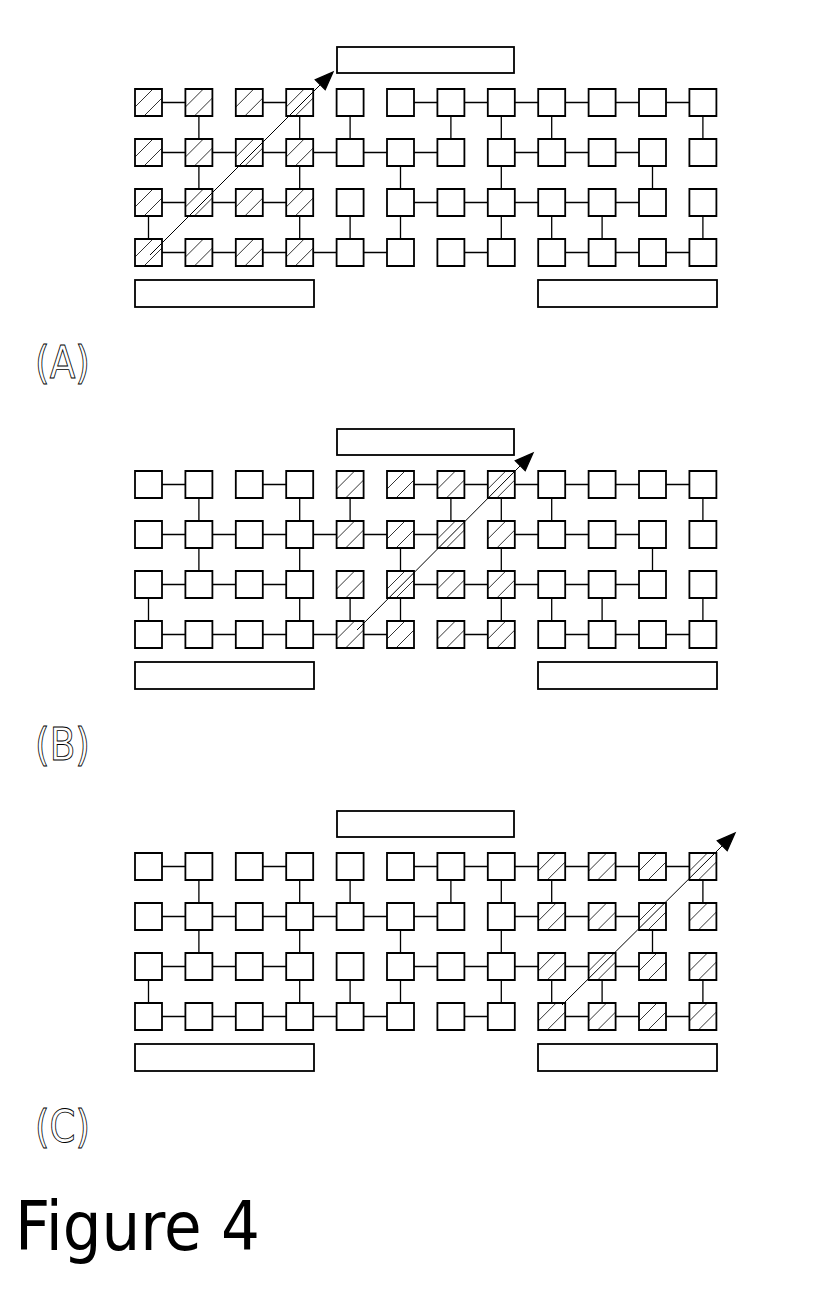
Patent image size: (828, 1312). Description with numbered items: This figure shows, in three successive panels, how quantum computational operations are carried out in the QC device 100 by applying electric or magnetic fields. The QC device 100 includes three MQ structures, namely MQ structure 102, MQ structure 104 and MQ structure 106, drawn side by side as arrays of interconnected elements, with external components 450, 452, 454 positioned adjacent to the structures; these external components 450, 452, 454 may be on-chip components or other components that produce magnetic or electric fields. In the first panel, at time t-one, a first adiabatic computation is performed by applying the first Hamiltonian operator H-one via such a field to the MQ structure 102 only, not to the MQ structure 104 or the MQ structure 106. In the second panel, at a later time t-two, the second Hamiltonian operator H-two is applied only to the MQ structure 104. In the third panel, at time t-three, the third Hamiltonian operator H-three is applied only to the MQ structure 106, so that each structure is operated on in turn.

In FIG. 4A, the QC device 100 is at (374, 174).
In FIG. 4B, the QC device 100 is at (374, 556).
In FIG. 4C, the QC device 100 is at (378, 938).
In FIG. 4A, the MQ structure 102 is at (225, 146).
In FIG. 4B, the MQ structure 102 is at (225, 528).
In FIG. 4C, the MQ structure 102 is at (225, 910).
In FIG. 4A, the MQ structure 104 is at (419, 211).
In FIG. 4B, the MQ structure 104 is at (419, 593).
In FIG. 4C, the MQ structure 104 is at (419, 975).
In FIG. 4A, the MQ structure 106 is at (627, 146).
In FIG. 4B, the MQ structure 106 is at (627, 528).
In FIG. 4C, the MQ structure 106 is at (627, 910).
In FIG. 4A, the external component 450 is at (224, 309).
In FIG. 4B, the external component 450 is at (224, 691).
In FIG. 4C, the external component 450 is at (224, 1073).
In FIG. 4A, the external component 452 is at (425, 44).
In FIG. 4B, the external component 452 is at (425, 426).
In FIG. 4C, the external component 452 is at (425, 808).
In FIG. 4A, the external component 454 is at (627, 310).
In FIG. 4B, the external component 454 is at (627, 692).
In FIG. 4C, the external component 454 is at (627, 1074).